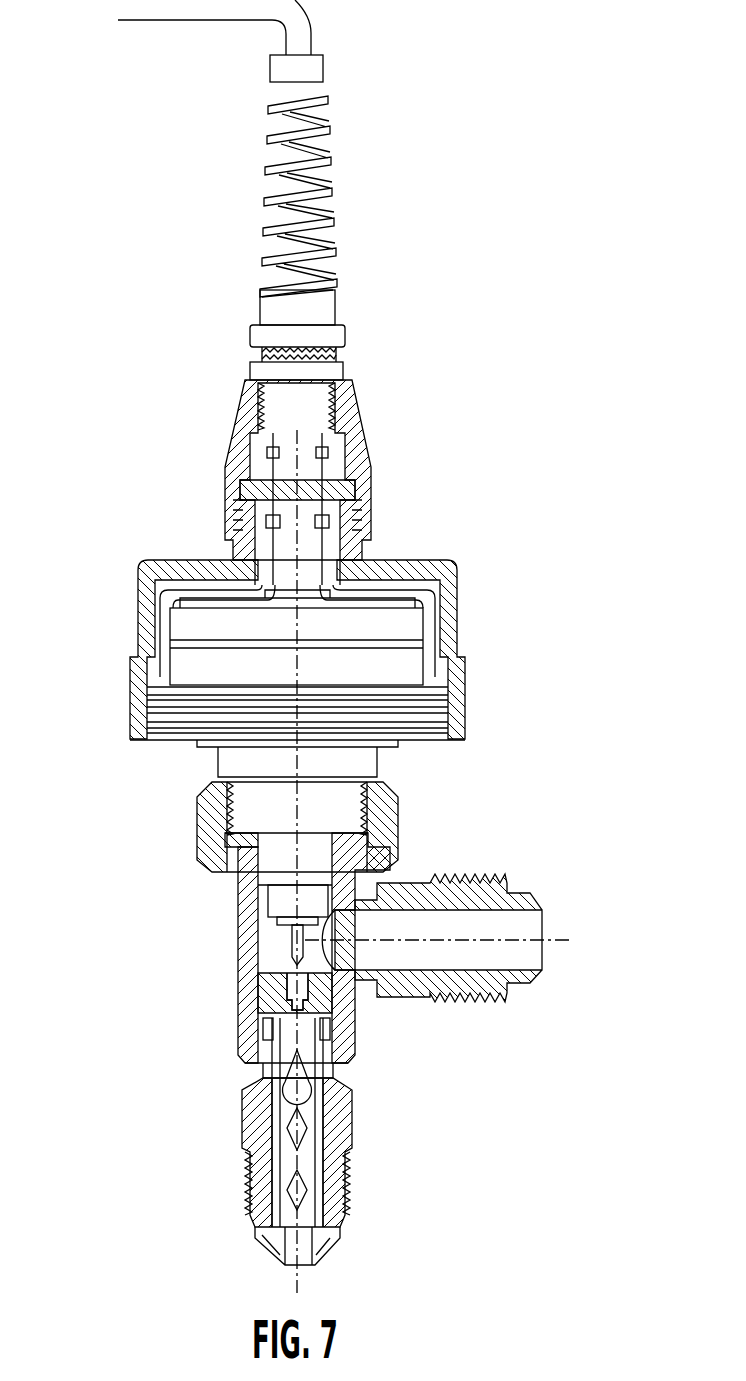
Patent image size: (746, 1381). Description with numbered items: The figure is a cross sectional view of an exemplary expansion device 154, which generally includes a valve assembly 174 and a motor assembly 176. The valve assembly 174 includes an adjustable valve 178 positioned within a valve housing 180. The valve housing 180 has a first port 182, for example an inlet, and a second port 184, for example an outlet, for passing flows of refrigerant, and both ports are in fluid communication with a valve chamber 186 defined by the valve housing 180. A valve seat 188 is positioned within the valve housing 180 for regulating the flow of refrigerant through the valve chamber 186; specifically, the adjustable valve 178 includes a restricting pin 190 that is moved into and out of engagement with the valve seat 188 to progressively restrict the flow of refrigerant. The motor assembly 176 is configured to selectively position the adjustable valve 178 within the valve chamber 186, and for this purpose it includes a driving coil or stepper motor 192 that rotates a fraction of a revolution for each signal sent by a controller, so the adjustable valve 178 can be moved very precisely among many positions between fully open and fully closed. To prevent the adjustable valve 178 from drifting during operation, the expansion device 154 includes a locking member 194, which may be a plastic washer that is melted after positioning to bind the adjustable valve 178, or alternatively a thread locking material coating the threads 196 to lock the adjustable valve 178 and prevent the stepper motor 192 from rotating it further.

The expansion device 154 is at (522, 259).
The valve assembly 174 is at (212, 1033).
The motor assembly 176 is at (136, 598).
The adjustable valve 178 is at (307, 897).
The valve housing 180 is at (248, 893).
The first port 182 is at (290, 1228).
The second port 184 is at (547, 954).
The valve chamber 186 is at (264, 974).
The valve seat 188 is at (311, 977).
The restricting pin 190 is at (290, 948).
The stepper motor 192 is at (402, 615).
The locking member 194 is at (240, 840).
The threads 196 is at (380, 800).